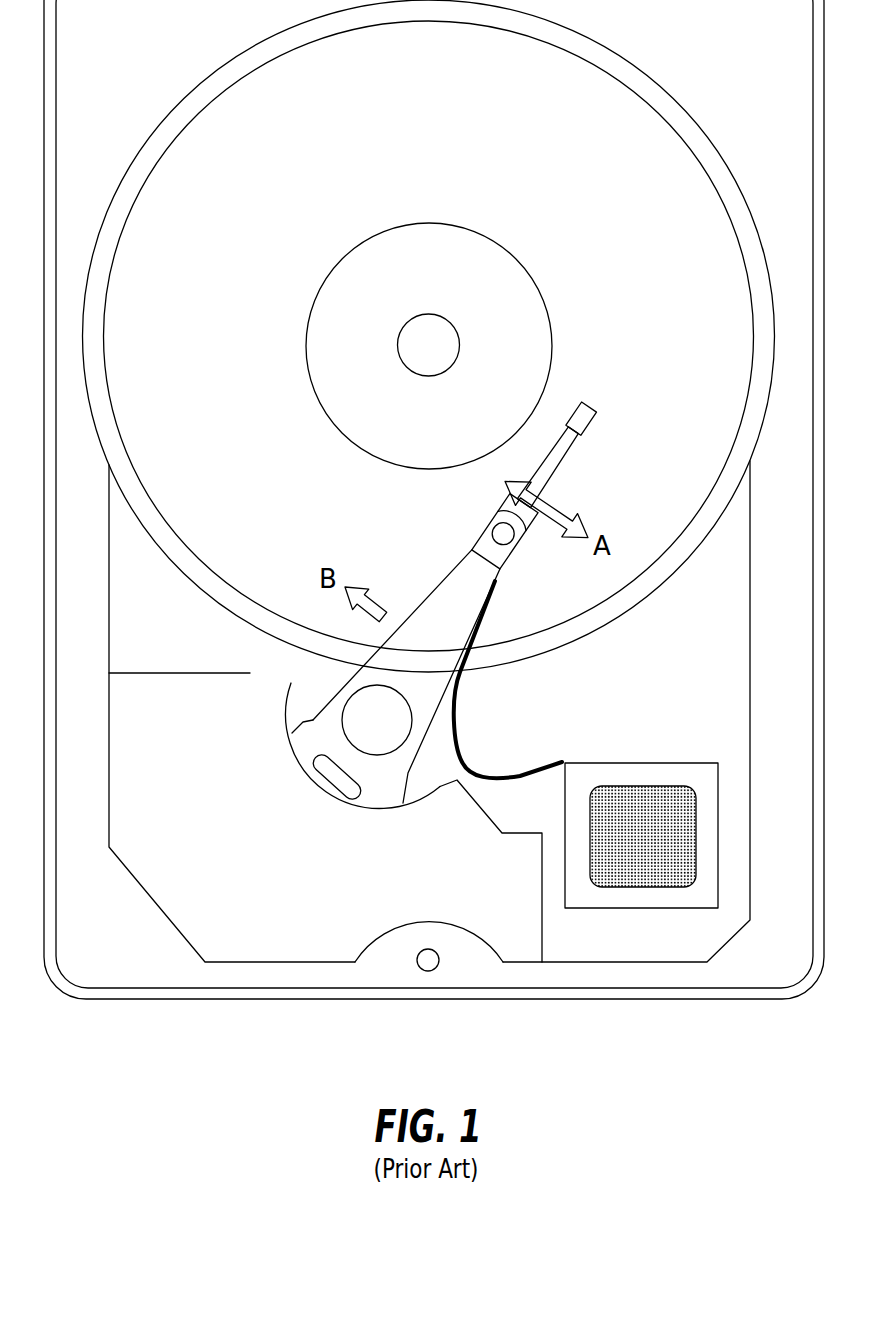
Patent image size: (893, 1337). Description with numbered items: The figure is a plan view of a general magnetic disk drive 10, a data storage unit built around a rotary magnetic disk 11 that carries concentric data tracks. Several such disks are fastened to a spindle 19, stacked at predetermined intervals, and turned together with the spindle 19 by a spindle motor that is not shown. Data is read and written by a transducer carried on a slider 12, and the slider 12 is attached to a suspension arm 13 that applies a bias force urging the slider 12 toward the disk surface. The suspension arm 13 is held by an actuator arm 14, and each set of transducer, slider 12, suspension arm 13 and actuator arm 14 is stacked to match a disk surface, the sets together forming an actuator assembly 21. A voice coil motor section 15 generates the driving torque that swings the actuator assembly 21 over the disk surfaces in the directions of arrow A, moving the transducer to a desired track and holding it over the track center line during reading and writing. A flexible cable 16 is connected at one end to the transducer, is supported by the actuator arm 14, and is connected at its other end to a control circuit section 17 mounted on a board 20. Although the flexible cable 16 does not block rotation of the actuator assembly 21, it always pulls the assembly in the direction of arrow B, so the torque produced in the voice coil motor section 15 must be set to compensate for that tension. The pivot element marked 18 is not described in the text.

The magnetic disk drive 10 is at (533, 1041).
The magnetic disk 11 is at (680, 160).
The slider 12 is at (590, 405).
The suspension arm 13 is at (562, 460).
The actuator arm 14 is at (342, 690).
The voice coil motor (VCM) section 15 is at (285, 948).
The flexible cable 16 is at (458, 753).
The control circuit section 17 is at (618, 790).
The pivot bearing 18 is at (395, 690).
The spindle 19 is at (442, 335).
The board 20 is at (688, 763).
The actuator assembly 21 is at (415, 576).